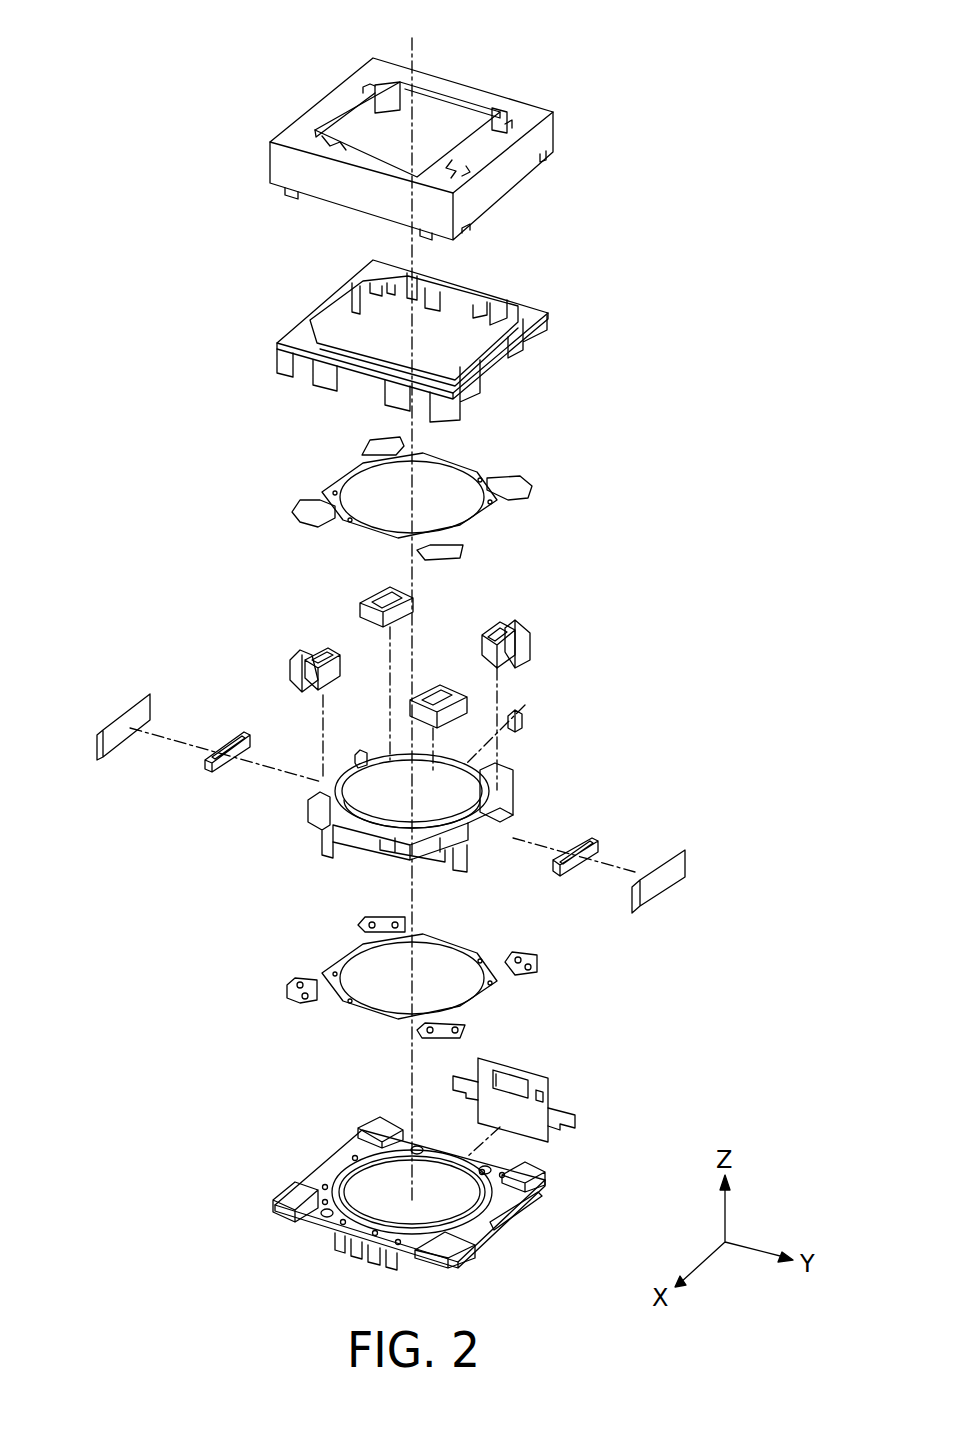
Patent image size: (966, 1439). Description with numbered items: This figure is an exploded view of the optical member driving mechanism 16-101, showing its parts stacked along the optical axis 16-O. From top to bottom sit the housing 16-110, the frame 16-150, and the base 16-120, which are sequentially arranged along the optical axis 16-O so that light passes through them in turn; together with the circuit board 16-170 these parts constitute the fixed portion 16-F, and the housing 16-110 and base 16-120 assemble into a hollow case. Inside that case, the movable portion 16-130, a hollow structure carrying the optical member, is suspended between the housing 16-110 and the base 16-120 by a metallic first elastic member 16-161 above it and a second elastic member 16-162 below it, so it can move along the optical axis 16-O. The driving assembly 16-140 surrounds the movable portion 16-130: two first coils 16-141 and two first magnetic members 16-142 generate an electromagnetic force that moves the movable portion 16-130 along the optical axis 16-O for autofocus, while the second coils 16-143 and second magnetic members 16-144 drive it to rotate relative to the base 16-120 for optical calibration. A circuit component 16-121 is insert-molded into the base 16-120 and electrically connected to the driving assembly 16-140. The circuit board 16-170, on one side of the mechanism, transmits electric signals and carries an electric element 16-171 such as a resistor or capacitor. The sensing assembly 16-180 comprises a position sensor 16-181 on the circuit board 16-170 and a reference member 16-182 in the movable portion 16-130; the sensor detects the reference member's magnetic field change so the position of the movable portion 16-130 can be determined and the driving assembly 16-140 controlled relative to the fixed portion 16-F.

The optical member driving mechanism 16-101 is at (105, 14).
The optical axis 16-O is at (410, 605).
The fixed portion 16-F is at (736, 135).
The housing 16-110 is at (333, 75).
The base 16-120 is at (325, 1160).
The circuit component 16-121 is at (336, 1243).
The frame 16-150 is at (305, 338).
The circuit board 16-170 is at (565, 1112).
The electric element 16-171 is at (545, 1102).
The movable portion 16-130 is at (500, 780).
The driving assembly 16-140 is at (736, 283).
The first coil 16-141 is at (588, 838).
The first magnetic member 16-142 is at (680, 860).
The second coil 16-143 is at (490, 628).
The second magnetic member 16-144 is at (522, 632).
The first elastic member 16-161 is at (347, 470).
The second elastic member 16-162 is at (347, 955).
The sensing assembly 16-180 is at (736, 430).
The position sensor 16-181 is at (510, 1082).
The reference member 16-182 is at (520, 710).